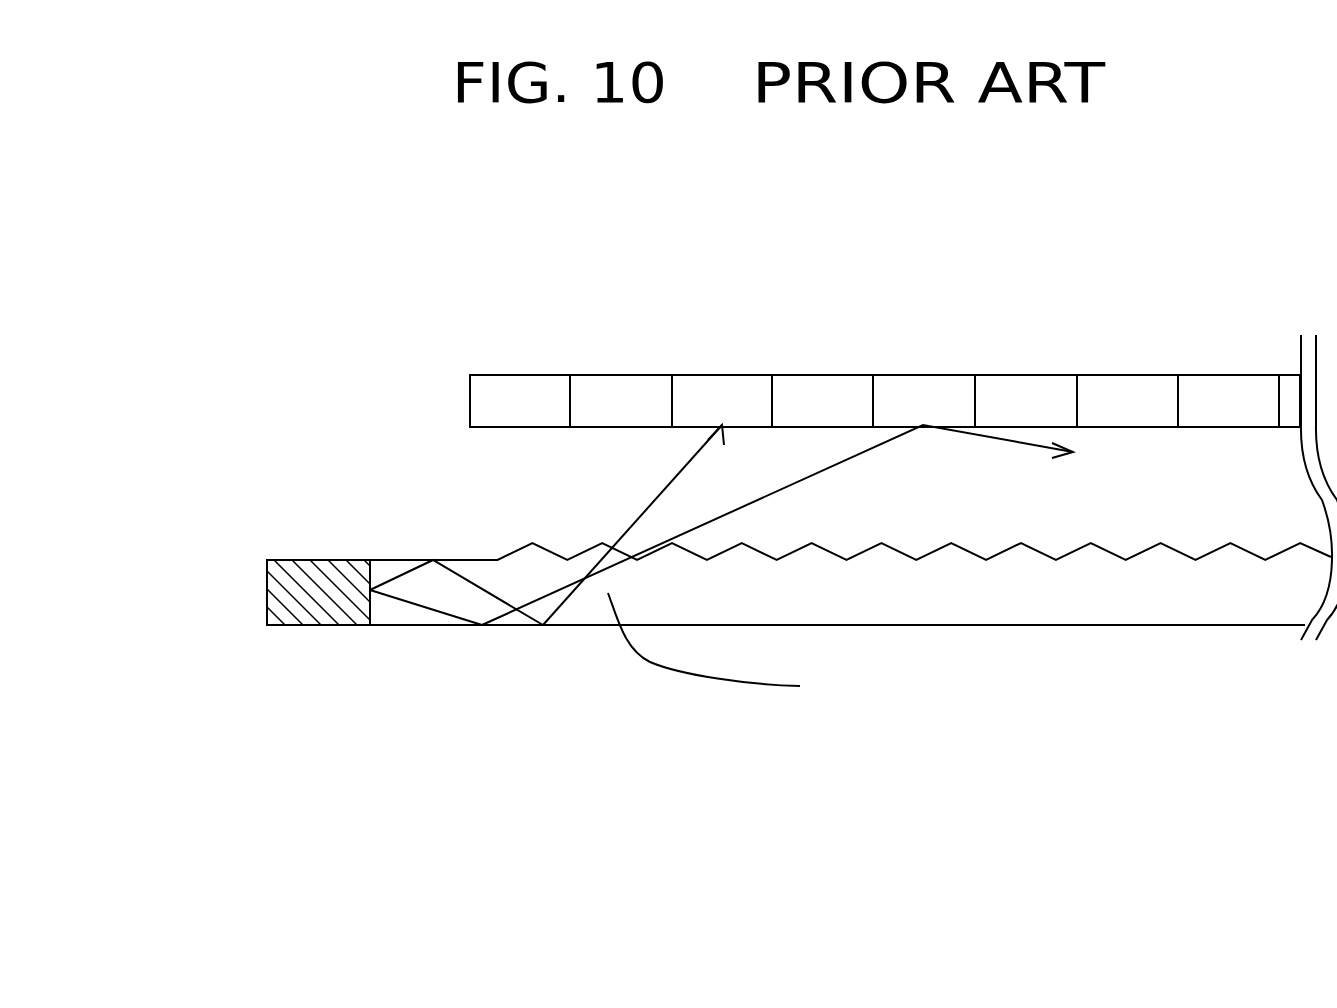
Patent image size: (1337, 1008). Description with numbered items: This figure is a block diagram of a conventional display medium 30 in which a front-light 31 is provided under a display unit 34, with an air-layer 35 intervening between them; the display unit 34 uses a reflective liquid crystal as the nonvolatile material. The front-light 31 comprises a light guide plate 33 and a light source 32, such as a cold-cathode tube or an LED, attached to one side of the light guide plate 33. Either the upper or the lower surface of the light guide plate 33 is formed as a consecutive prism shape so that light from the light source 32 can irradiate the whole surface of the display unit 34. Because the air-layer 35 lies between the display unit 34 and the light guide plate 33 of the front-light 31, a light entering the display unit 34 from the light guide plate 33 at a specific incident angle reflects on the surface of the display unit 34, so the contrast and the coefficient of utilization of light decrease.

The display medium 30 is at (233, 409).
The front-light 31 is at (524, 722).
The light source 32 is at (310, 625).
The light guide plate 33 is at (413, 625).
The display unit 34 is at (492, 375).
The air-layer 35 is at (618, 497).